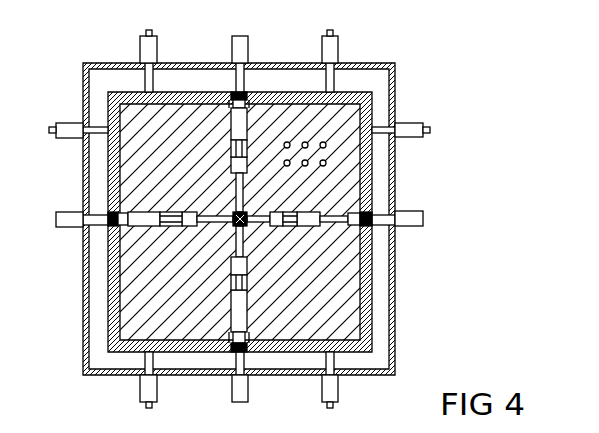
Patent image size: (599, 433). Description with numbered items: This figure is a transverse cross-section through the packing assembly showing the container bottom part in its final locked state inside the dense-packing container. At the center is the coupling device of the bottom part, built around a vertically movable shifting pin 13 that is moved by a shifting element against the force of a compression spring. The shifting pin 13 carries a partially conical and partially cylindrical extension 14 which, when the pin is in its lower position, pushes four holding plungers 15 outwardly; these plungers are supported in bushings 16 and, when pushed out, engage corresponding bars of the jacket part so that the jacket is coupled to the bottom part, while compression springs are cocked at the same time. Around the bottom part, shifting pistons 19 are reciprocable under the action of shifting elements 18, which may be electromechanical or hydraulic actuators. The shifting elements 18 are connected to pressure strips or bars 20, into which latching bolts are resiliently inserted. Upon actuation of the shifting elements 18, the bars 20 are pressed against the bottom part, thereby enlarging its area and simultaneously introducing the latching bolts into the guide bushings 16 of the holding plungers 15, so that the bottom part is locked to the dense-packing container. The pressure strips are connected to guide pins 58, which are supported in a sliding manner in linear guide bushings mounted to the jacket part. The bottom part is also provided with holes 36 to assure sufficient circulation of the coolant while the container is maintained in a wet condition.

The shifting pin 13 is at (235, 230).
The partially conical and partially cylindrical extension 14 is at (247, 213).
The holding plungers 15 is at (236, 204).
The bushings 16 is at (231, 148).
The shifting elements 18 is at (240, 44).
The shifting pistons 19 is at (240, 82).
The pressure strips or bars 20 is at (190, 93).
The holes 36 is at (322, 141).
The guide pins 58 is at (146, 33).